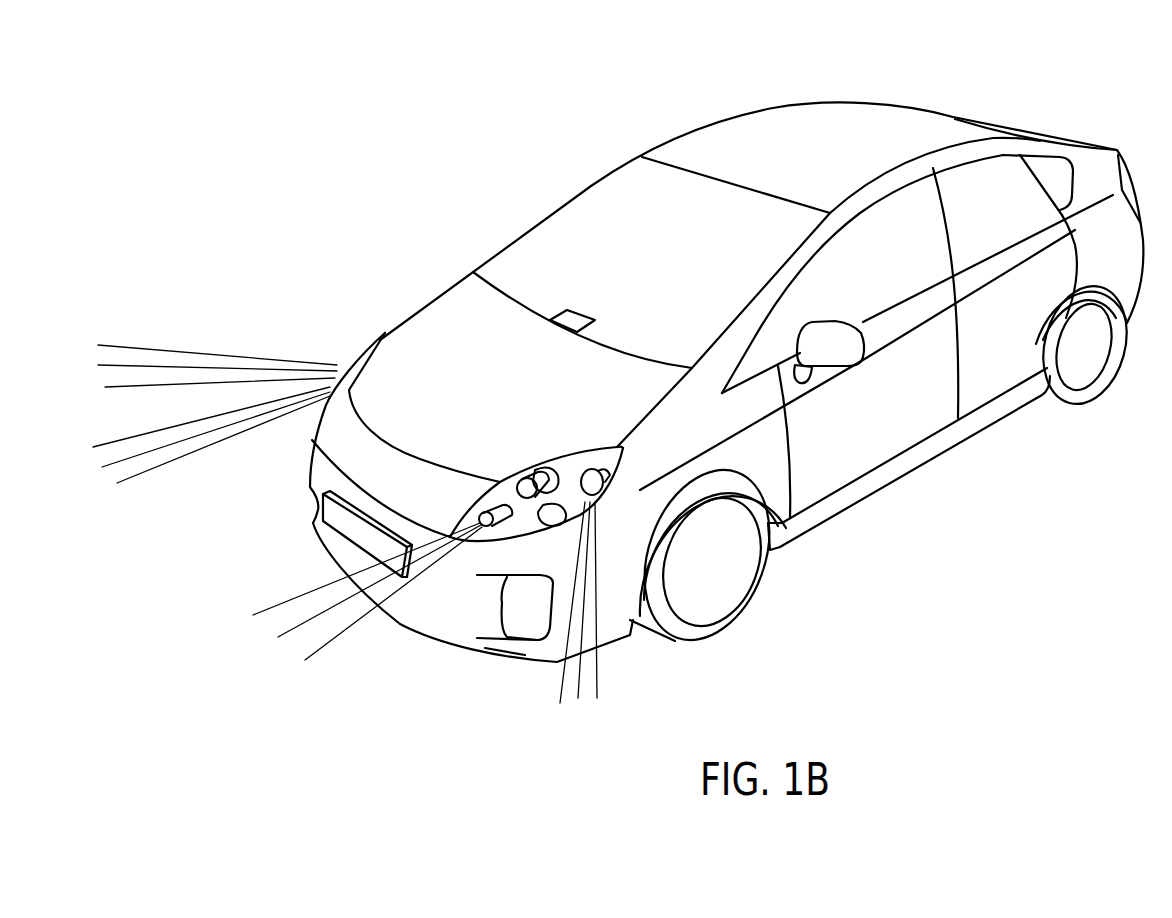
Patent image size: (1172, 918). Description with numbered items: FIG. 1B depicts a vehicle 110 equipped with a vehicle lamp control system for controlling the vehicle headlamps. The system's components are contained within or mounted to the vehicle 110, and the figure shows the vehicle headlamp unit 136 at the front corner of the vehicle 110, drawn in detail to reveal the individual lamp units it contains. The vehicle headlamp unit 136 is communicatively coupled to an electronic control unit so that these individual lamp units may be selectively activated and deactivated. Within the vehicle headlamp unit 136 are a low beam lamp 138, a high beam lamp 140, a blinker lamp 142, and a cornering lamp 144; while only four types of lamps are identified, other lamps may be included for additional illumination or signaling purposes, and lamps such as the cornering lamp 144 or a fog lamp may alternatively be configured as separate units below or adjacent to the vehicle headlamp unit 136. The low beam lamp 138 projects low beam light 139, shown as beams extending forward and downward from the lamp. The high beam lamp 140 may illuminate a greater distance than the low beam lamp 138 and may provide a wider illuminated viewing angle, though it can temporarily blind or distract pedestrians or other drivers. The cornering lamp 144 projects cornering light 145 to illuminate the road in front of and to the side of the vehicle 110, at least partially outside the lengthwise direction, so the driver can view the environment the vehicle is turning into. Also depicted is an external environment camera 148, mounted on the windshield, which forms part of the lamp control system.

The vehicle 110 is at (877, 101).
The vehicle headlamp unit 136 is at (573, 450).
The low beam lamp 138 is at (480, 515).
The low beam light 139 is at (282, 612).
The high beam lamp 140 is at (543, 477).
The blinker lamp 142 is at (517, 480).
The cornering lamp 144 is at (605, 478).
The cornering light 145 is at (590, 678).
The external environment camera 148 is at (579, 309).